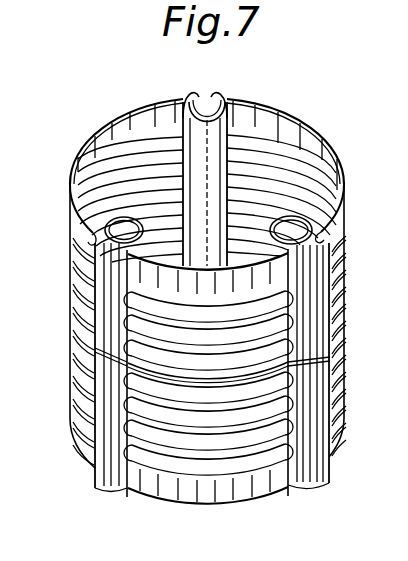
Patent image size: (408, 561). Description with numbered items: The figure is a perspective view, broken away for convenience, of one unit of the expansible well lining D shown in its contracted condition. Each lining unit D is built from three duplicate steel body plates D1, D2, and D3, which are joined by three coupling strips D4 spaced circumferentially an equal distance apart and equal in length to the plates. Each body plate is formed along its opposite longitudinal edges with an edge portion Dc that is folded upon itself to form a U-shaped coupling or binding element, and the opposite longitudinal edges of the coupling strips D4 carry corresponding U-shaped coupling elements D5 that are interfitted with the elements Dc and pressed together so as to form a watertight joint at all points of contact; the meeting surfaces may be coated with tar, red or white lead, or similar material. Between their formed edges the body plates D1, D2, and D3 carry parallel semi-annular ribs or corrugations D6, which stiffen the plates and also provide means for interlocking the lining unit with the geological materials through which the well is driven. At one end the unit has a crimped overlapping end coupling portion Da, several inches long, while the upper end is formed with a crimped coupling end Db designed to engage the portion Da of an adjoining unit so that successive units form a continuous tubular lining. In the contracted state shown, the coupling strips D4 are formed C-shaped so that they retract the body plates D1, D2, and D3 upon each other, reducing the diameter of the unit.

The expansible well lining D is at (323, 158).
The body steel plate D1 is at (68, 173).
The body steel plate D2 is at (176, 473).
The body steel plate D3 is at (348, 418).
The coupling strip D4 is at (185, 134).
The U-shaped coupling element D5 is at (325, 243).
The semi-annular ribs or corrugations D6 is at (174, 438).
The crimped overlapping end coupling portion Da is at (262, 131).
The crimped coupling end Db is at (269, 480).
The longitudinal edge portion Dc is at (213, 95).